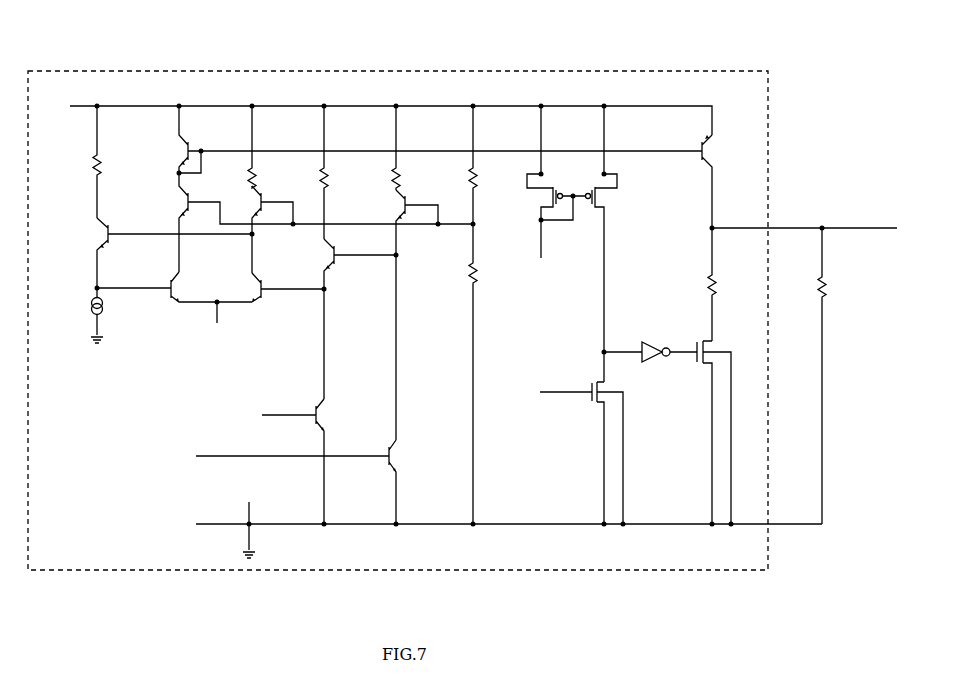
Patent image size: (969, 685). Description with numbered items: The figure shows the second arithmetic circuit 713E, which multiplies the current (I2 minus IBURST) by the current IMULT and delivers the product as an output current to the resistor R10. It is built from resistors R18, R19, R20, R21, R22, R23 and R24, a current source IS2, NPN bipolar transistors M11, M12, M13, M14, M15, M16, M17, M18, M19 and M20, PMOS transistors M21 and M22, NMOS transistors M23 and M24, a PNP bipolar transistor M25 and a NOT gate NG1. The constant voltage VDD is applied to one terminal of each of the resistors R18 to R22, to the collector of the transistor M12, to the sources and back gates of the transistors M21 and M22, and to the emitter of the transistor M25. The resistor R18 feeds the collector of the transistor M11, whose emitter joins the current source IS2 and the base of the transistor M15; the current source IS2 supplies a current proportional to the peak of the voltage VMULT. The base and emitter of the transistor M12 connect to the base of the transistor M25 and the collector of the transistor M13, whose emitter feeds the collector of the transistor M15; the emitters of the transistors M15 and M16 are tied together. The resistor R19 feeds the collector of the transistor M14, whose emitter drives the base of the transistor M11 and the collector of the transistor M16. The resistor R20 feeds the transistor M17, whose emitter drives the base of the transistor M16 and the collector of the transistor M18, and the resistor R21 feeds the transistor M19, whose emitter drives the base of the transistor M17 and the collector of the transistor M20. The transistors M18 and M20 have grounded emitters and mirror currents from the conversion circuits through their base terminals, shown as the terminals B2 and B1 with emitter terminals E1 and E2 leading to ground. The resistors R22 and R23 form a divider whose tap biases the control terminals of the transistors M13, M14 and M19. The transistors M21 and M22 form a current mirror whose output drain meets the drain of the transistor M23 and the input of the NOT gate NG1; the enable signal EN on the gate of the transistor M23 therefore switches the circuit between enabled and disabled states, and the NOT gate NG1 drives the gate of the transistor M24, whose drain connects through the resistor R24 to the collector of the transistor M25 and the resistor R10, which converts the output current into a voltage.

The second arithmetic circuit 713E is at (363, 69).
The resistor R18 is at (108, 166).
The resistor R19 is at (259, 181).
The resistor R20 is at (336, 180).
The resistor R21 is at (406, 180).
The resistor R22 is at (484, 180).
The resistor R23 is at (484, 271).
The resistor R24 is at (723, 288).
The resistor R10 is at (831, 290).
The NPN bipolar transistor M11 is at (111, 233).
The NPN bipolar transistor M12 is at (194, 151).
The NPN bipolar transistor M13 is at (194, 201).
The NPN bipolar transistor M14 is at (268, 201).
The NPN bipolar transistor M15 is at (184, 291).
The NPN bipolar transistor M16 is at (271, 291).
The NPN bipolar transistor M17 is at (339, 256).
The NPN bipolar transistor M18 is at (329, 418).
The NPN bipolar transistor M19 is at (413, 201).
The NPN bipolar transistor M20 is at (404, 458).
The PMOS transistor M21 is at (536, 205).
The PMOS transistor M22 is at (613, 206).
The NMOS transistor M23 is at (586, 384).
The NMOS transistor M24 is at (718, 352).
The PNP bipolar transistor M25 is at (696, 145).
The current source IS2 is at (109, 309).
The NOT gate NG1 is at (650, 345).
The constant voltage VDD is at (374, 116).
The enable signal EN is at (552, 394).
The base terminal B1 is at (183, 459).
The base terminal B2 is at (247, 417).
The emitter terminal E1 is at (497, 529).
The emitter terminal E2 is at (250, 521).